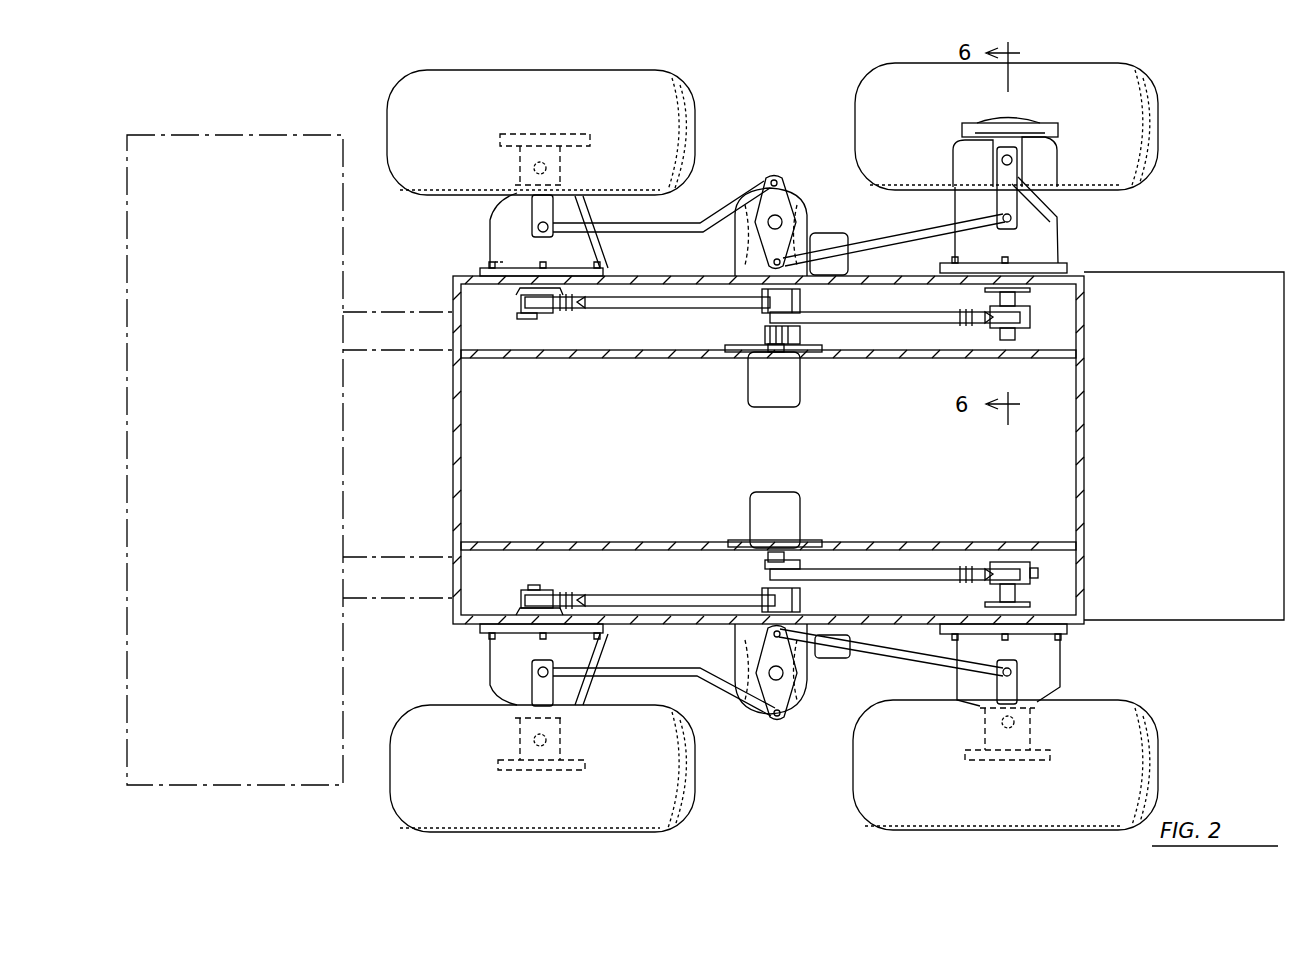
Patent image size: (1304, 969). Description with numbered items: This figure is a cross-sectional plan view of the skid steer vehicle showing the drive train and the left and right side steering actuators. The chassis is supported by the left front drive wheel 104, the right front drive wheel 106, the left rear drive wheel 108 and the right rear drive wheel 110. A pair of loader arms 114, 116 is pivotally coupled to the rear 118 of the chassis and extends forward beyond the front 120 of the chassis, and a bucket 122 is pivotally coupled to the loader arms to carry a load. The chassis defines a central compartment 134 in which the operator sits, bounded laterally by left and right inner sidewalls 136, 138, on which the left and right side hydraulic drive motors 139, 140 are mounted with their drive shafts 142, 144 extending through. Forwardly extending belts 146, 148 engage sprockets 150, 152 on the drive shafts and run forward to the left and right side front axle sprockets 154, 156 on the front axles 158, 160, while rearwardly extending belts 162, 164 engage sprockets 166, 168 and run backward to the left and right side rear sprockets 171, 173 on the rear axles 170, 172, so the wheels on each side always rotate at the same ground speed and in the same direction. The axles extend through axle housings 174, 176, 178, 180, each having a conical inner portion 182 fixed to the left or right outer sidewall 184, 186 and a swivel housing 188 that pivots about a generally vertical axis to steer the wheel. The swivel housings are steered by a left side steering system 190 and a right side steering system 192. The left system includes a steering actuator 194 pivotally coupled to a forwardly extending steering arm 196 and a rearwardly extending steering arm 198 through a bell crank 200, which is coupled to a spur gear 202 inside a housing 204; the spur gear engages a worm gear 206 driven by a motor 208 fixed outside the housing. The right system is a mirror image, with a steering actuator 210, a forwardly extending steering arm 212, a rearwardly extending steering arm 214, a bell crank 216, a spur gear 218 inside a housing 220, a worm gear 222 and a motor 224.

The left front drive wheel 104 is at (392, 820).
The right front drive wheel 106 is at (395, 90).
The left rear drive wheel 108 is at (1158, 728).
The right rear drive wheel 110 is at (1158, 118).
The loader arm 114 is at (382, 605).
The loader arm 116 is at (402, 310).
The rear of the chassis 118 is at (1238, 270).
The front of the chassis 120 is at (453, 440).
The bucket 122 is at (200, 792).
The central cavity or compartment 134 is at (615, 455).
The left inner sidewall 136 is at (525, 530).
The right inner sidewall 138 is at (490, 360).
The left side hydraulic drive motor 139 is at (802, 505).
The right side hydraulic drive motor 140 is at (802, 385).
The drive shaft 142 is at (765, 562).
The drive shaft 144 is at (765, 336).
The forwardly extending belt 146 is at (627, 595).
The forwardly extending belt 148 is at (570, 310).
The sprocket 150 is at (792, 599).
The sprocket 152 is at (792, 299).
The left side front axle sprocket 154 is at (520, 600).
The right side front axle sprocket 156 is at (522, 302).
The left side front axle 158 is at (545, 588).
The right side front axle 160 is at (530, 319).
The rearwardly extending belt 162 is at (920, 576).
The rearwardly extending belt 164 is at (950, 312).
The sprocket 166 is at (765, 578).
The sprocket 168 is at (528, 135).
The rear axle 170 is at (1008, 562).
The left side rear sprocket 171 is at (1038, 576).
The rear axle 172 is at (990, 124).
The right side rear sprocket 173 is at (1022, 316).
The axle housing 174 is at (490, 684).
The axle housing 176 is at (492, 228).
The axle housing 178 is at (1060, 682).
The right rear axle housing 180 is at (1058, 220).
The conical inner portion 182 is at (580, 208).
The left outer sidewall 184 is at (615, 631).
The right outer sidewall 186 is at (612, 275).
The swivel housing 188 is at (518, 152).
The left side steering system 190 is at (771, 778).
The right side steering system 192 is at (806, 137).
The steering actuator 194 is at (815, 722).
The forwardly extending steering arm 196 is at (648, 672).
The rearwardly extending steering arm 198 is at (892, 676).
The bell crank 200 is at (812, 660).
The spur gear 202 is at (795, 704).
The steering actuator housing 204 is at (757, 706).
The worm gear 206 is at (745, 645).
The motor 208 is at (858, 635).
The steering actuator 210 is at (739, 128).
The forwardly extending steering arm 212 is at (664, 228).
The rearwardly extending steering arm 214 is at (904, 236).
The bell crank 216 is at (752, 232).
The spur gear 218 is at (800, 204).
The steering actuator housing 220 is at (777, 181).
The worm gear 222 is at (745, 262).
The motor 224 is at (848, 262).